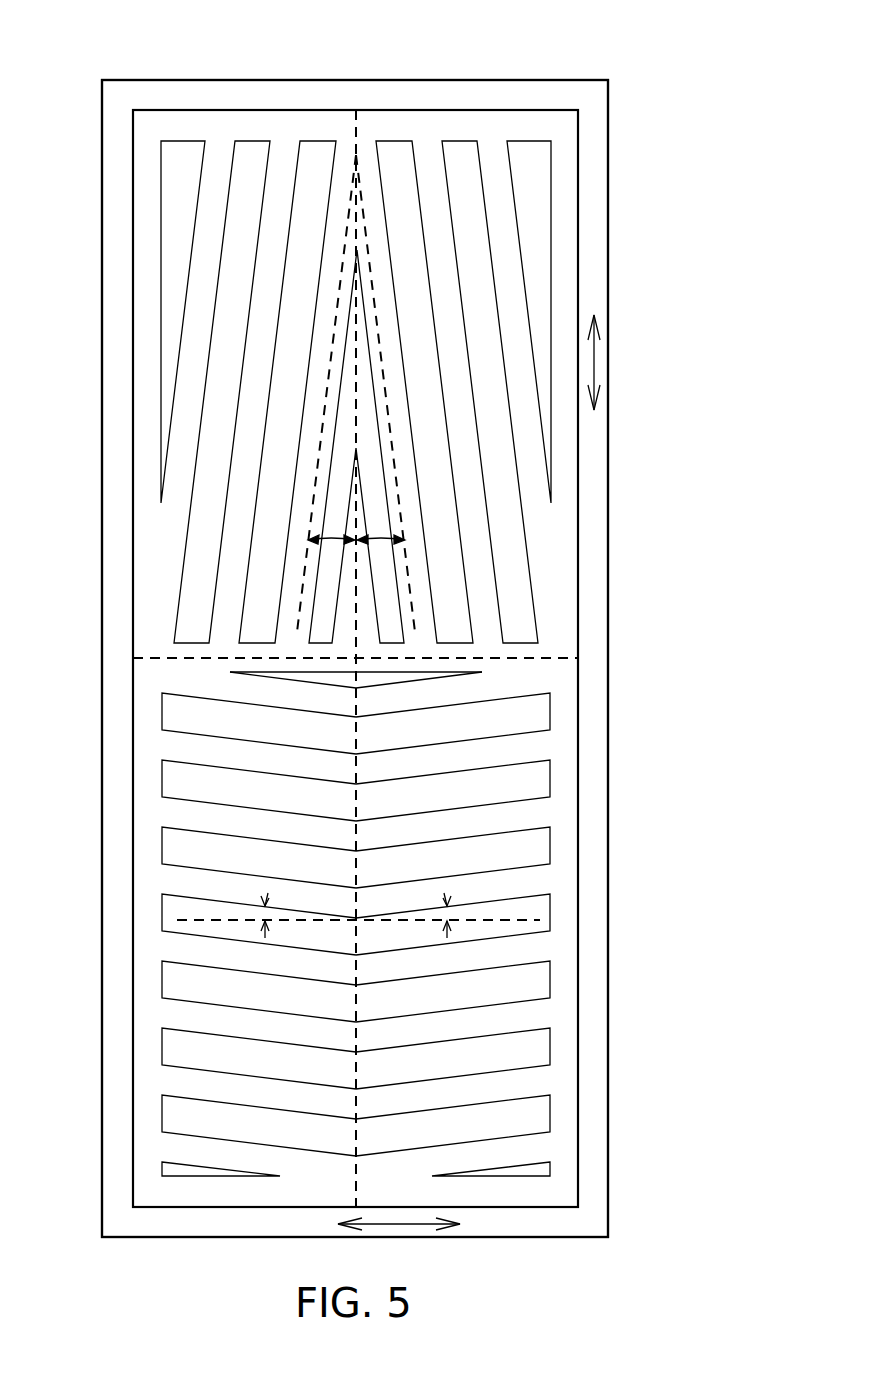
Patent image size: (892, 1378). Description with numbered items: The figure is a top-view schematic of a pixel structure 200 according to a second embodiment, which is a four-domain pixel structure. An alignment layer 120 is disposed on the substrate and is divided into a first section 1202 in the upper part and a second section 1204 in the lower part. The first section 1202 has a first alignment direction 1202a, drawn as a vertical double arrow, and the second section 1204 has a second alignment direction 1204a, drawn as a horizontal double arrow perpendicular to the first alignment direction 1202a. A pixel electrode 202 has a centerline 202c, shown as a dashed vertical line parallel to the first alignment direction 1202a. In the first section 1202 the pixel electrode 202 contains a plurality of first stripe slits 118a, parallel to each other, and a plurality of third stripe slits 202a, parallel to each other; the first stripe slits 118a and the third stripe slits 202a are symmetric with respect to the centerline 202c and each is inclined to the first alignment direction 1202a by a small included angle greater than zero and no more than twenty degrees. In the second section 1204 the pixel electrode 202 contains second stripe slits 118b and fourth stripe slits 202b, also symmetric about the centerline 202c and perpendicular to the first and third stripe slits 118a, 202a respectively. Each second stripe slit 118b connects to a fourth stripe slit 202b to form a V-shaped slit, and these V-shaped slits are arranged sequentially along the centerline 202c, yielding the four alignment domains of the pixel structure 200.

The pixel structure 200 is at (640, 98).
The alignment layer 120 is at (609, 262).
The pixel electrode 202 is at (578, 201).
The centerline 202c is at (359, 107).
The first section 1202 is at (598, 521).
The first alignment direction 1202a is at (597, 363).
The second section 1204 is at (598, 1068).
The second alignment direction 1204a is at (400, 1226).
The first stripe slits 118a is at (251, 177).
The third stripe slits 202a is at (391, 177).
The second stripe slits 118b is at (189, 718).
The fourth stripe slits 202b is at (527, 719).